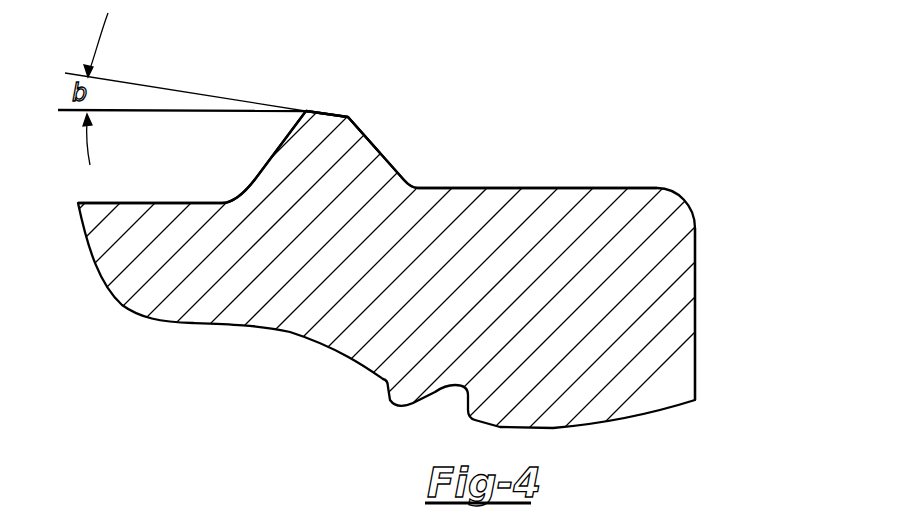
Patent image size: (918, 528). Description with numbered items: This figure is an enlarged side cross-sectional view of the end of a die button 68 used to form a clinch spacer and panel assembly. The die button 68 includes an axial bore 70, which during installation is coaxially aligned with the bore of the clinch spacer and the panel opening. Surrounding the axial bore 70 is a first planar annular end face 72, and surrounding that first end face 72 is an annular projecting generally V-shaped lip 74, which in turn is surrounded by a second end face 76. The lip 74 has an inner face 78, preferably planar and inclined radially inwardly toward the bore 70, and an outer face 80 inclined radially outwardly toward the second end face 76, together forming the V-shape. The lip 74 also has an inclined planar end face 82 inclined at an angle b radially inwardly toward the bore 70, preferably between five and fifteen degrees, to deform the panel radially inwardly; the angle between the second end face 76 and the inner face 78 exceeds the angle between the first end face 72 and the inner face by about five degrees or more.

The die button 68 is at (640, 150).
The axial bore 70 is at (696, 277).
The first planar annular end face 72 is at (563, 187).
The annular projecting generally V-shaped lip 74 is at (347, 141).
The second end face 76 is at (142, 202).
The inner face 78 is at (370, 140).
The outer face 80 is at (275, 152).
The inclined planar end face 82 is at (334, 112).